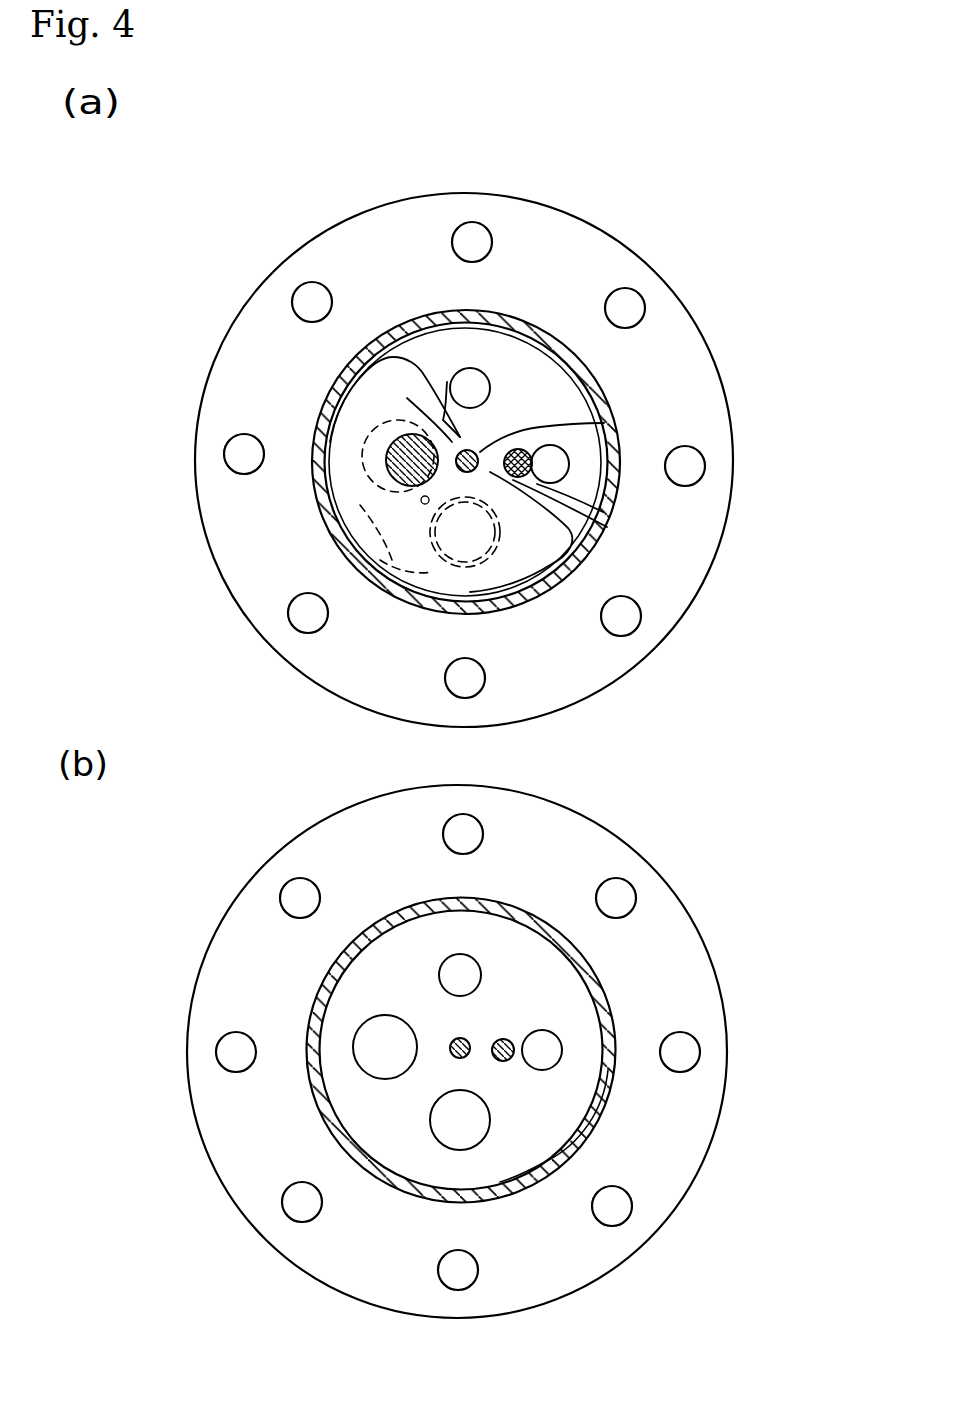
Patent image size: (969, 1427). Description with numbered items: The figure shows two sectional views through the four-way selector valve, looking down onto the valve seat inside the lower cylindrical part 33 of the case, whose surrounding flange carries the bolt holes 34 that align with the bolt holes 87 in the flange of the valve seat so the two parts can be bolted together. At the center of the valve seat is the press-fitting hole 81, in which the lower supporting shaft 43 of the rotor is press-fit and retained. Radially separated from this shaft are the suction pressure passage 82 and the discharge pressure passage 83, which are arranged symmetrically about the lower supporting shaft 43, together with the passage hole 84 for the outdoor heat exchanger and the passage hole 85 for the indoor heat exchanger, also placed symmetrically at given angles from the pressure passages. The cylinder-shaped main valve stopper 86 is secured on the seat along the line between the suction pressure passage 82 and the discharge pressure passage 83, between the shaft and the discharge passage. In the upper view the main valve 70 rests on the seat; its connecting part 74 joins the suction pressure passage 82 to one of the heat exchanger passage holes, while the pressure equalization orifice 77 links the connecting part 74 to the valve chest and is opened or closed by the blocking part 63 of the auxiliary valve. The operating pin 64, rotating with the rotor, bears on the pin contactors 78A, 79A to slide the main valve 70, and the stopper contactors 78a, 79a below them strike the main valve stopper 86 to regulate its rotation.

The lower cylindrical part 33 is at (537, 328).
The bolt hole 34 is at (710, 433).
The lower supporting shaft 43 is at (484, 446).
The blocking part for the pressure equalization orifice 63 is at (365, 442).
The operating pin 64 is at (604, 423).
The main valve 70 is at (535, 576).
The connecting part 74 is at (333, 537).
The pressure equalization orifice 77 is at (425, 504).
The pin contactor 78A is at (412, 360).
The stopper contactor 78a is at (446, 380).
The pin contactor 79A is at (592, 546).
The stopper contactor 79a is at (593, 517).
The press-fitting hole 81 is at (412, 1097).
The suction pressure passage 82 is at (392, 470).
The discharge pressure passage 83 is at (557, 462).
The passage hole for the outdoor heat exchanger 84 is at (473, 382).
The passage hole for the indoor heat exchanger 85 is at (436, 560).
The main valve stopper 86 is at (527, 450).
The bolt hole 87 is at (307, 297).